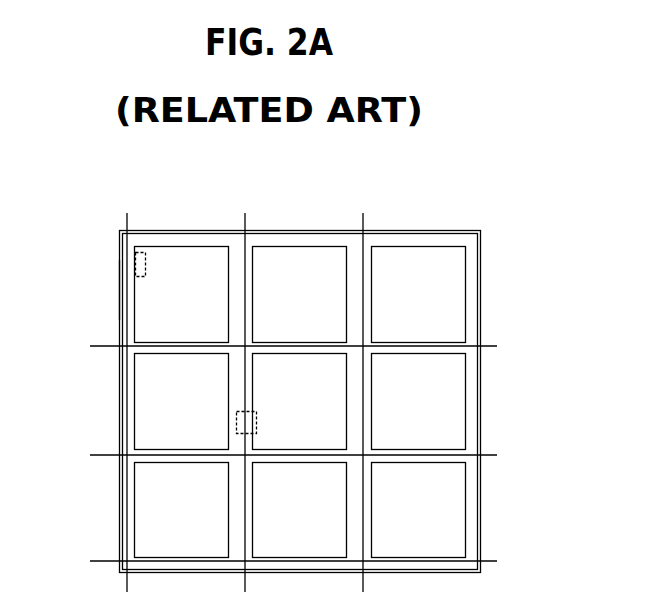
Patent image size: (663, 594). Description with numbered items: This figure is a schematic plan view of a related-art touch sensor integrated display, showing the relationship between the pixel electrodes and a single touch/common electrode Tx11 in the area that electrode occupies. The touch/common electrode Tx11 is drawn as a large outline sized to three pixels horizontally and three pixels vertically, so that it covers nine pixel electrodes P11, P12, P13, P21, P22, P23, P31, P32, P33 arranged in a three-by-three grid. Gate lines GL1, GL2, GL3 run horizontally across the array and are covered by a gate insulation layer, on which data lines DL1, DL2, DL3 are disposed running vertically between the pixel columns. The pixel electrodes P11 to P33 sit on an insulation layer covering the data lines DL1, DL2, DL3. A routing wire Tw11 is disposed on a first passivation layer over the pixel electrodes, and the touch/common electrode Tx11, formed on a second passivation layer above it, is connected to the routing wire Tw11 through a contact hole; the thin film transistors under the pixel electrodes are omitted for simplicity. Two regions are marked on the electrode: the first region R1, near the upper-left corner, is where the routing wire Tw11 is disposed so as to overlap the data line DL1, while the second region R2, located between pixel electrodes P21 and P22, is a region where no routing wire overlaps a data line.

The touch/common electrode Tx11 is at (449, 230).
The routing wire Tw11 is at (118, 287).
The data line DL1 is at (125, 390).
The data line DL2 is at (245, 390).
The data line DL3 is at (361, 390).
The gate line GL1 is at (275, 346).
The gate line GL2 is at (275, 456).
The gate line GL3 is at (275, 561).
The pixel electrode P11 is at (182, 295).
The pixel electrode P12 is at (300, 295).
The pixel electrode P13 is at (419, 295).
The pixel electrode P21 is at (182, 402).
The pixel electrode P22 is at (300, 402).
The pixel electrode P23 is at (419, 402).
The pixel electrode P31 is at (182, 510).
The pixel electrode P32 is at (300, 510).
The pixel electrode P33 is at (419, 510).
The first region R1 is at (118, 258).
The second region R2 is at (236, 421).